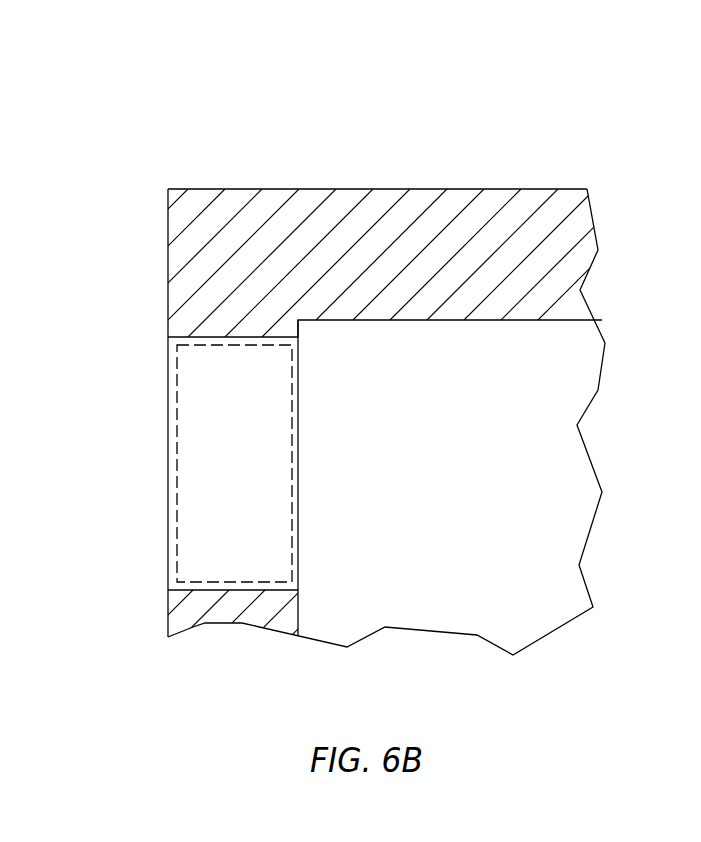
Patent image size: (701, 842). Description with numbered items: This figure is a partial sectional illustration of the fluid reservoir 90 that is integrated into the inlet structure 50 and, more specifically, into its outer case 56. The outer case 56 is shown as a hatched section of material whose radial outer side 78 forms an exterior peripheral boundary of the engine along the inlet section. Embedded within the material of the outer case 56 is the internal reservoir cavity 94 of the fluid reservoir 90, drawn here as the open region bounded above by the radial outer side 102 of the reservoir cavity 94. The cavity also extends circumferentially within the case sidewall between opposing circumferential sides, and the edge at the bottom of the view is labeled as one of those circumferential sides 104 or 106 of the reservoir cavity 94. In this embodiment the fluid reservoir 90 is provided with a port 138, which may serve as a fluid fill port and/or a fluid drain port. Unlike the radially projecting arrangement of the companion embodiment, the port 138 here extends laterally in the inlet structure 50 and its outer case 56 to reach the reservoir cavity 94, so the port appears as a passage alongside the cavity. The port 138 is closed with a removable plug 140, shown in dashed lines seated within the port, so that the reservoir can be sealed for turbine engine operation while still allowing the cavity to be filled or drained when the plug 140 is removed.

The inlet structure 50 is at (352, 120).
The outer case 56 is at (161, 175).
The radial outer side 78 is at (556, 189).
The fluid reservoir 90 is at (477, 178).
The radial outer side 102 is at (562, 320).
The reservoir cavity 94 is at (470, 480).
The port 138 is at (158, 453).
The plug 140 is at (168, 403).
The circumferential side 104 is at (246, 643).
The circumferential side 106 is at (298, 607).